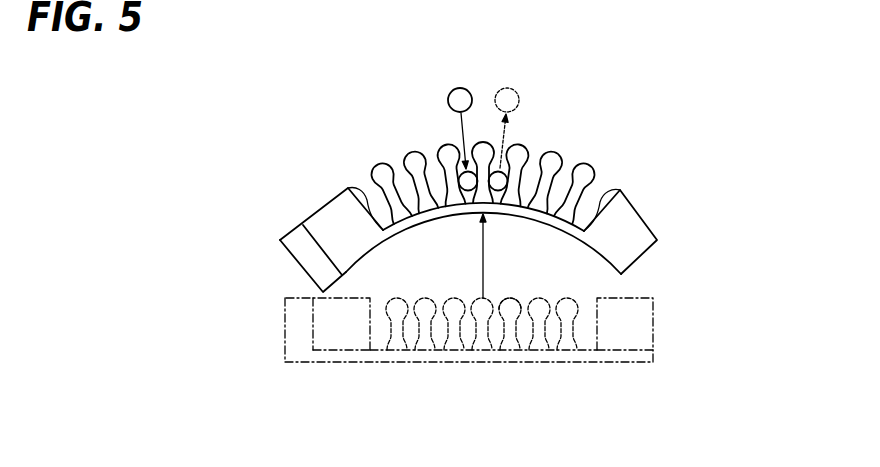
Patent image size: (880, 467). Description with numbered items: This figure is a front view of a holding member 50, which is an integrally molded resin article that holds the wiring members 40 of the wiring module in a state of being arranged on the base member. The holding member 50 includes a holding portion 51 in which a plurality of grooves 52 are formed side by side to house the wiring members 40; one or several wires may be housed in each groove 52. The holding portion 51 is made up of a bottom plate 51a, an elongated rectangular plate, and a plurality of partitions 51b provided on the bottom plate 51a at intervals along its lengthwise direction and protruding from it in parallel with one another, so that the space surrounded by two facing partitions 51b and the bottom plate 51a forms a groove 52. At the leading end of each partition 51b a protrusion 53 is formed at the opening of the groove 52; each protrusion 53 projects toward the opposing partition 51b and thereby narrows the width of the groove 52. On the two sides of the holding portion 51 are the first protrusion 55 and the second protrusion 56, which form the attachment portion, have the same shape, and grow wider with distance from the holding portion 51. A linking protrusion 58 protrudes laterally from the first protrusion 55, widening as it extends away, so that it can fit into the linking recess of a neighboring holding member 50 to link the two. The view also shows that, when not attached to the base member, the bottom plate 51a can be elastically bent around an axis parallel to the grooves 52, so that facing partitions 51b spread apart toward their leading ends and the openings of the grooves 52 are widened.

The wiring member 40 is at (462, 88).
The holding member 50 is at (299, 161).
The holding portion 51 is at (410, 142).
The bottom plate 51a is at (434, 218).
The partition 51b is at (394, 222).
The groove 52 is at (560, 212).
The protrusion 53 is at (530, 157).
The first protrusion 55 is at (323, 220).
The second protrusion 56 is at (642, 218).
The linking protrusion 58 is at (283, 262).